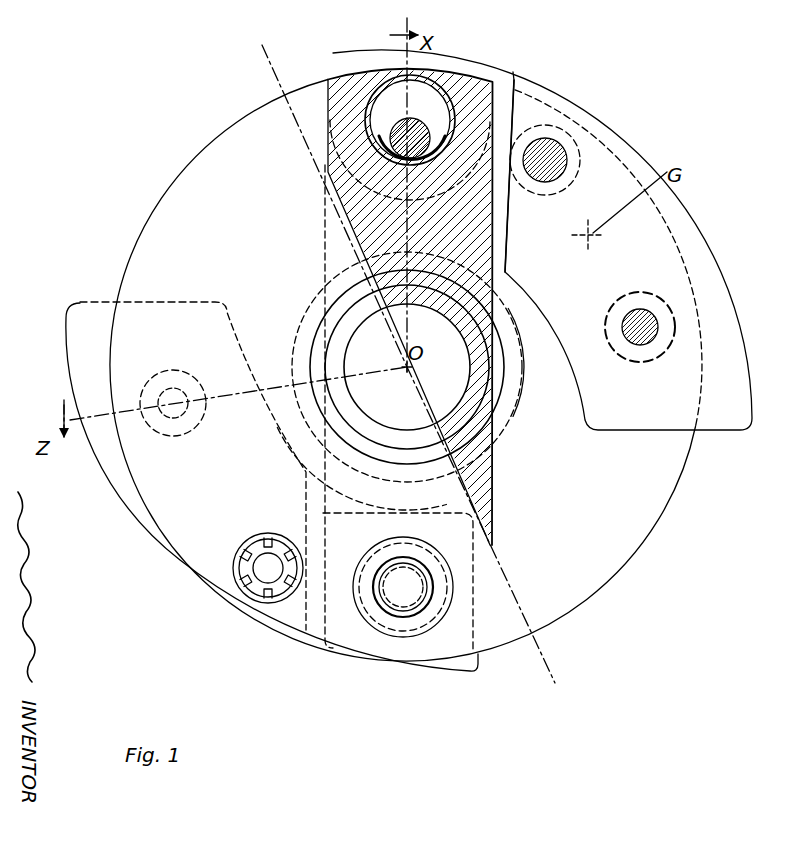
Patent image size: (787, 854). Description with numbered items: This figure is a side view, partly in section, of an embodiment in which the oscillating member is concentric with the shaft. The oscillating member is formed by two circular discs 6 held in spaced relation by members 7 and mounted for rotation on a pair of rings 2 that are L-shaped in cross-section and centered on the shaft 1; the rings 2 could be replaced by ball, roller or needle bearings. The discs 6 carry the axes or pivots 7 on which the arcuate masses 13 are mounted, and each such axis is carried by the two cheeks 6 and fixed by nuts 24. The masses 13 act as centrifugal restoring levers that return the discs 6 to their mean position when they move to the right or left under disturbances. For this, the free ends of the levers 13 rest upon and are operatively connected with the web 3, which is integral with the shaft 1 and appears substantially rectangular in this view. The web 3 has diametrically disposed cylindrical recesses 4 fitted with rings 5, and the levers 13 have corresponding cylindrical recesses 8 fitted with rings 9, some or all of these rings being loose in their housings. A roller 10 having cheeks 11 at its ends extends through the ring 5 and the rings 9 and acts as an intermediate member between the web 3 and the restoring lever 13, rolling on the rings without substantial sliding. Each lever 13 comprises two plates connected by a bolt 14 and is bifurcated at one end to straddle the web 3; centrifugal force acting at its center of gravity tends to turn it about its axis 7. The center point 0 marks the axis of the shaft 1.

The center axis O 0 is at (407, 367).
The shaft 1 is at (342, 390).
The rings 2 is at (345, 305).
The web 3 is at (490, 130).
The cylindrical recesses 4 is at (410, 92).
The rings 5 is at (330, 80).
The circular discs 6 is at (200, 167).
The members / pivots 7 is at (550, 160).
The cylindrical recesses 8 is at (447, 135).
The rings 9 is at (383, 127).
The roller 10 is at (410, 132).
The cheeks 11 is at (420, 607).
The arcuate masses / restoring levers 13 is at (90, 312).
The bolt 14 is at (640, 327).
The nuts 24 is at (252, 602).